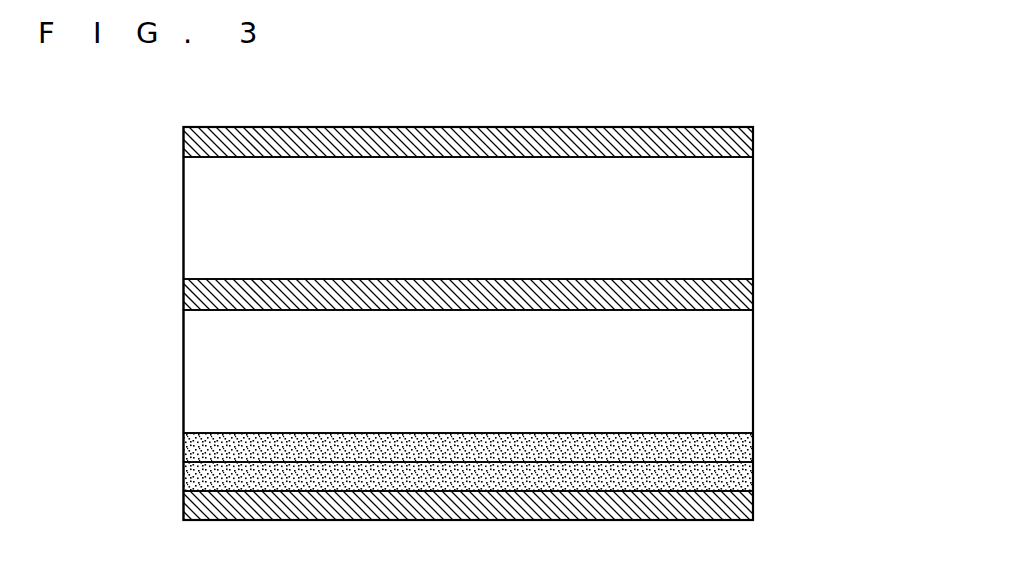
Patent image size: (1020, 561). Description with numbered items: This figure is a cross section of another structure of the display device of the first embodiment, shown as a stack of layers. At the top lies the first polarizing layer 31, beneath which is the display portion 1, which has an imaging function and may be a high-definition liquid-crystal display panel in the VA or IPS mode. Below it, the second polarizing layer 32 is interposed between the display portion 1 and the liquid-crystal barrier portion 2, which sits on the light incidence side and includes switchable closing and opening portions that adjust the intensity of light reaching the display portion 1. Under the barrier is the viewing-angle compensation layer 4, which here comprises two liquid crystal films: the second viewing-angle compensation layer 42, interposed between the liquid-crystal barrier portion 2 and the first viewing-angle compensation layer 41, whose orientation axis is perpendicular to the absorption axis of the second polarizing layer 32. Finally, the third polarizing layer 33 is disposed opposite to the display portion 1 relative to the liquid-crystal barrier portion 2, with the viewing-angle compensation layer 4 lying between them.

The first polarizing layer 31 is at (742, 145).
The display portion 1 is at (742, 226).
The second polarizing layer 32 is at (742, 295).
The liquid-crystal barrier portion 2 is at (742, 366).
The viewing-angle compensation layer 4 is at (535, 454).
The second viewing-angle compensation layer 42 is at (742, 440).
The first viewing-angle compensation layer 41 is at (742, 477).
The third polarizing layer 33 is at (742, 510).